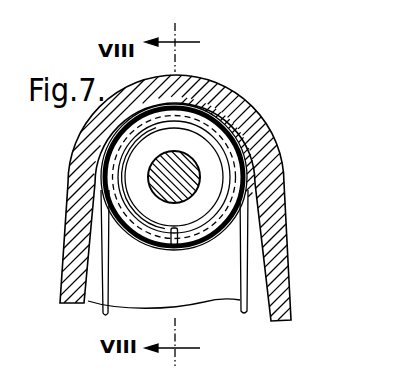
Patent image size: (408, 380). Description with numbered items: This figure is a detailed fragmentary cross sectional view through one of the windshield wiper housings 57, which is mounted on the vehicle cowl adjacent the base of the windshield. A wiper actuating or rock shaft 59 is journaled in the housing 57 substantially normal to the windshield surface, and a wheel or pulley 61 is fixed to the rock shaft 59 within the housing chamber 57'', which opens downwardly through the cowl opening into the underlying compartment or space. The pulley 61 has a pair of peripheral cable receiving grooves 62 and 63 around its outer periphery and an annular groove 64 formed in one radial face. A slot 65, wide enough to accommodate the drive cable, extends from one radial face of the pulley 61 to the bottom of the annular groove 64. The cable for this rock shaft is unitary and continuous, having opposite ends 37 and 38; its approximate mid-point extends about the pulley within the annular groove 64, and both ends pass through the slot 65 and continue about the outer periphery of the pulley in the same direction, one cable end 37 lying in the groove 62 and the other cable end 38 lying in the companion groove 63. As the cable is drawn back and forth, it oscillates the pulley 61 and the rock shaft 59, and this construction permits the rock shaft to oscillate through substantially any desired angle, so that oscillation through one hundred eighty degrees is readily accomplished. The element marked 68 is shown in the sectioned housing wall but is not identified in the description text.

The housing 57 is at (191, 198).
The housing crown portion 68 is at (214, 102).
The annular groove 64 is at (250, 120).
The peripheral cable receiving groove 62 is at (252, 144).
The companion peripheral cable receiving groove 63 is at (174, 177).
The pulley 61 is at (230, 170).
The rock shaft 59 is at (199, 182).
The slot 65 is at (176, 247).
The cable end 38 is at (100, 245).
The cable end 37 is at (247, 282).
The housing chamber 57'' is at (129, 287).